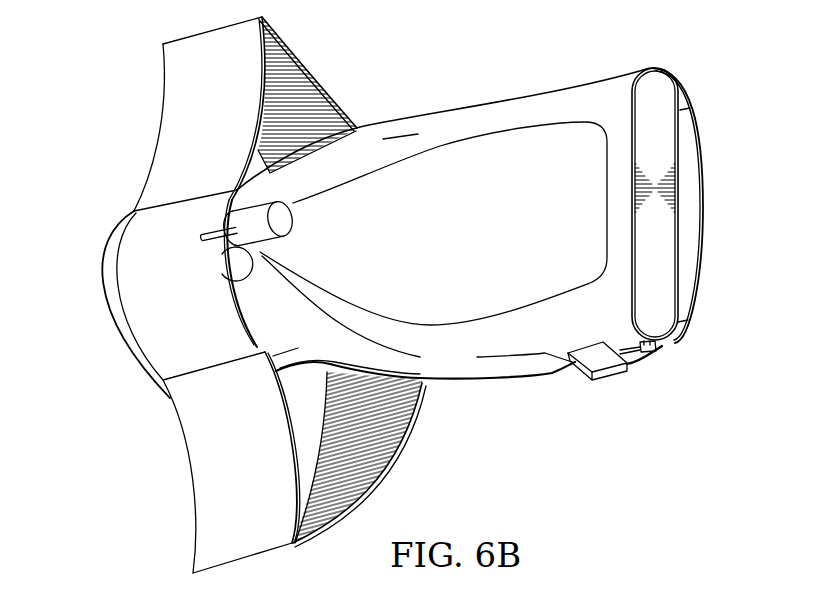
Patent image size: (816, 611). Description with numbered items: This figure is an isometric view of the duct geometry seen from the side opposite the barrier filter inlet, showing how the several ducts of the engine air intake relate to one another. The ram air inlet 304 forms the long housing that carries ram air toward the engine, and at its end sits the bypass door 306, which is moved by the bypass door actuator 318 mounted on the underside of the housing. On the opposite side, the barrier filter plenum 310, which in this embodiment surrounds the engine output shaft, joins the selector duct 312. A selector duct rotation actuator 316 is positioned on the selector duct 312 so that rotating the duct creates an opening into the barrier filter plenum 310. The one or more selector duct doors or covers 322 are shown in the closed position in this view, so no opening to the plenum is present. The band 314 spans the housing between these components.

The ram air inlet 304 is at (722, 168).
The bypass door 306 is at (664, 245).
The barrier filter plenum 310 is at (414, 461).
The selector duct 312 is at (105, 228).
The band / face panel 314 is at (535, 118).
The selector duct rotation actuator 316 is at (222, 268).
The bypass door actuator 318 is at (603, 367).
The selector duct doors or covers 322 is at (183, 225).